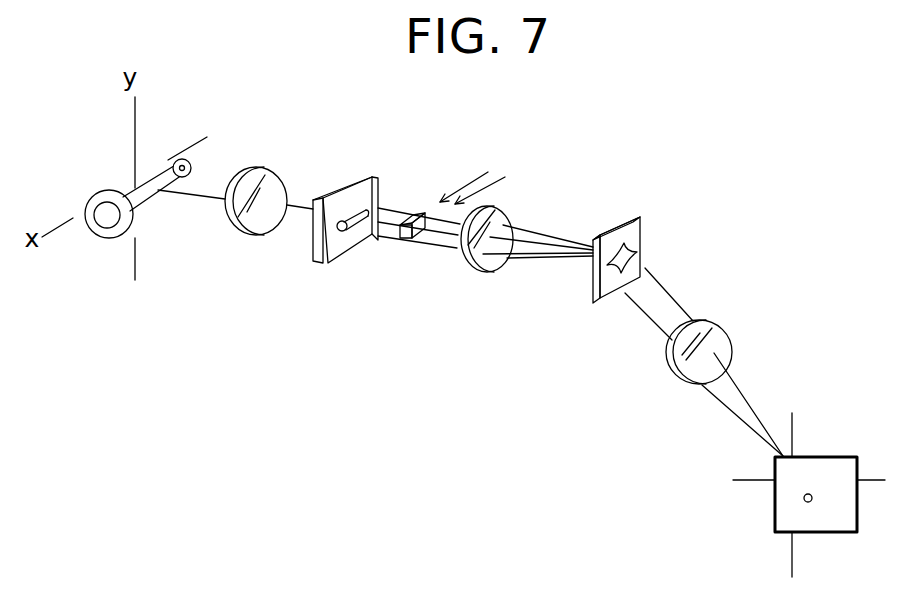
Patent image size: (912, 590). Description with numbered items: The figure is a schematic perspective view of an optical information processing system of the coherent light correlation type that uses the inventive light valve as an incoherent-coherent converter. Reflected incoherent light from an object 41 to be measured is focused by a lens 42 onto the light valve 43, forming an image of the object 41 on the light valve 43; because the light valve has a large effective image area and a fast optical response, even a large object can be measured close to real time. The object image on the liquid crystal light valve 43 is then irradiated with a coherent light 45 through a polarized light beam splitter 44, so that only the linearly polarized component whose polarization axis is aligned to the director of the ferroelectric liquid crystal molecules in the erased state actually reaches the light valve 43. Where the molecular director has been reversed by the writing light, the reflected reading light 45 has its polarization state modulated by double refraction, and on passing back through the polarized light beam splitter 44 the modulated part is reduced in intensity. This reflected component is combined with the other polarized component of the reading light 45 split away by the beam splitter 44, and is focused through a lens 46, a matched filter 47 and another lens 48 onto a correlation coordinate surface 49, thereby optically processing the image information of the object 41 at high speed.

The object 41 is at (175, 157).
The lens 42 is at (252, 167).
The light valve 43 is at (350, 175).
The polarized light beam splitter 44 is at (400, 243).
The coherent light 45 is at (497, 176).
The lens 46 is at (467, 274).
The matched filter 47 is at (603, 235).
The lens 48 is at (723, 328).
The correlation coordinate surface 49 is at (777, 503).